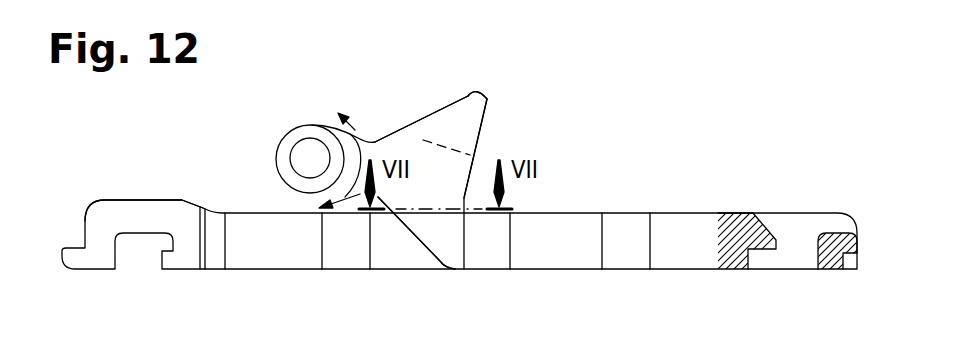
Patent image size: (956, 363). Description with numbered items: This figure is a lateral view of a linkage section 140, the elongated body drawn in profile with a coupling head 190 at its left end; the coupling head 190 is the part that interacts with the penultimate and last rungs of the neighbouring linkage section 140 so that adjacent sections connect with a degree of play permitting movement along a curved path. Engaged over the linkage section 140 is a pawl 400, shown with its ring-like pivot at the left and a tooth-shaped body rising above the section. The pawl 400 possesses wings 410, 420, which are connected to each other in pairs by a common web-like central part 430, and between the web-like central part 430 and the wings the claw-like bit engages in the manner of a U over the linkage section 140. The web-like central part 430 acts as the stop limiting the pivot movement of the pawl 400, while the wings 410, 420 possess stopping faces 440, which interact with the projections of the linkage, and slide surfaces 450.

The linkage section 140 is at (686, 248).
The coupling head 190 is at (147, 208).
The pawl 400 is at (366, 99).
The wing 410 is at (449, 247).
The wing 420 is at (457, 117).
The web-like central part 430 is at (450, 164).
The stopping face 440 is at (484, 119).
The slide surface 450 is at (432, 113).